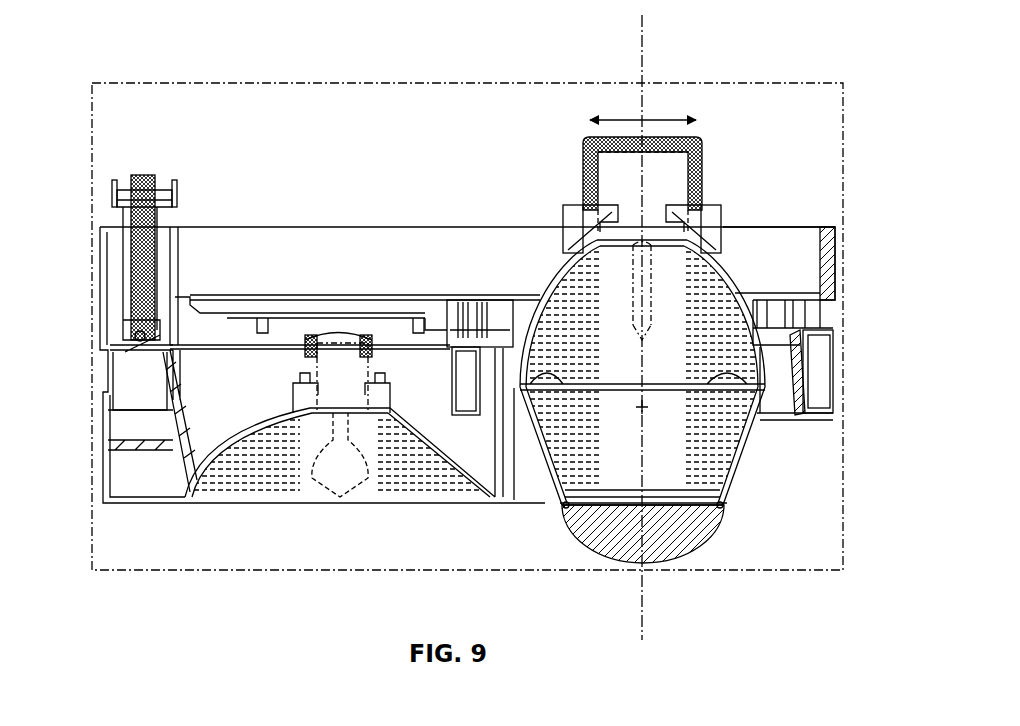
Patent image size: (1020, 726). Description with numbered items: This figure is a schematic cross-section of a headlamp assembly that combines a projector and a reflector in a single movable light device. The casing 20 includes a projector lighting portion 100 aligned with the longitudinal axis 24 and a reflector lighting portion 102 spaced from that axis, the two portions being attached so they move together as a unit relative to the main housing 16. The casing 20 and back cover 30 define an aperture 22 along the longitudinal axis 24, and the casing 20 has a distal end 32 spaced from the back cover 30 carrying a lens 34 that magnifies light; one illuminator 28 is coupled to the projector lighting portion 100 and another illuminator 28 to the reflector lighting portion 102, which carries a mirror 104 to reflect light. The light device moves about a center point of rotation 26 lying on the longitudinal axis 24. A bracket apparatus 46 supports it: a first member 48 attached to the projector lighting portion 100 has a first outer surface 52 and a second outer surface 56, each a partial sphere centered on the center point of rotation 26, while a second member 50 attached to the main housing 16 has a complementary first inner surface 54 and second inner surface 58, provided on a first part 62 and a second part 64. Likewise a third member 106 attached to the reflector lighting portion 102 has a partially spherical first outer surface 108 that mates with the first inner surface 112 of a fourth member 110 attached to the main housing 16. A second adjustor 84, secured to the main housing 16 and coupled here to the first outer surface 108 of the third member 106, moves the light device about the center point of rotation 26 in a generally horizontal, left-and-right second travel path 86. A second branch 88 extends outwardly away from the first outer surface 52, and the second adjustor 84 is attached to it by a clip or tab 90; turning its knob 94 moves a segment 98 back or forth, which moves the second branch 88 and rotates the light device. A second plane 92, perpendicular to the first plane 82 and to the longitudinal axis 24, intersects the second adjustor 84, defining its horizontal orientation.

The main housing 16 is at (295, 235).
The casing 20 is at (742, 460).
The aperture 22 is at (603, 470).
The longitudinal axis 24 is at (652, 108).
The center point of rotation 26 is at (646, 410).
The illuminator 28 is at (727, 243).
The back cover 30 is at (572, 258).
The distal end 32 is at (725, 515).
The lens 34 is at (705, 523).
The bracket apparatus 46 is at (497, 315).
The first member 48 is at (780, 292).
The second member 50 is at (822, 383).
The first outer surface 52 is at (810, 357).
The first inner surface 54 is at (788, 327).
The second outer surface 56 is at (460, 467).
The second inner surface 58 is at (511, 345).
The first part 62 is at (822, 416).
The second part 64 is at (380, 432).
The first plane 82 is at (650, 52).
The second adjustor 84 is at (178, 200).
The second travel path 86 is at (626, 118).
The second branch 88 is at (142, 357).
The clip or tab 90 is at (140, 360).
The second plane 92 is at (212, 80).
The knob 94 is at (150, 176).
The segment 98 is at (133, 277).
The projector lighting portion 100 is at (551, 515).
The reflector lighting portion 102 is at (360, 508).
The mirror 104 is at (228, 480).
The third member 106 is at (175, 402).
The first outer surface 108 is at (165, 418).
The fourth member 110 is at (143, 500).
The first inner surface 112 is at (177, 462).